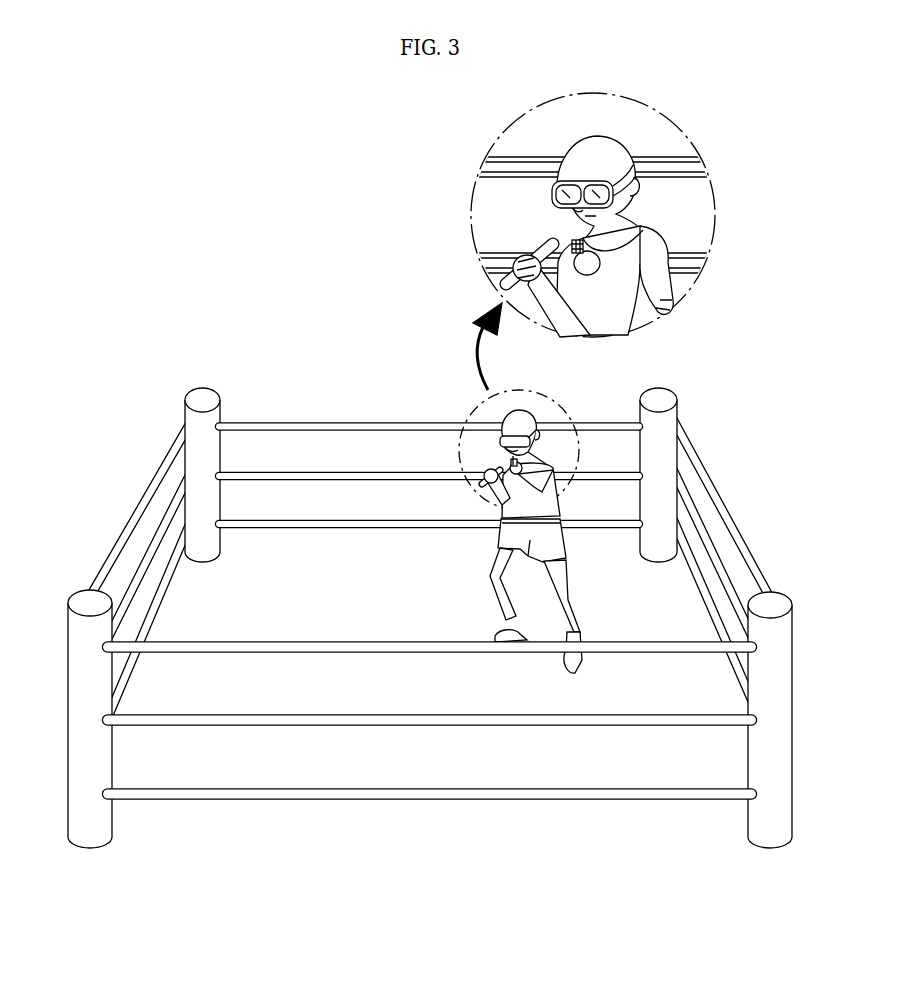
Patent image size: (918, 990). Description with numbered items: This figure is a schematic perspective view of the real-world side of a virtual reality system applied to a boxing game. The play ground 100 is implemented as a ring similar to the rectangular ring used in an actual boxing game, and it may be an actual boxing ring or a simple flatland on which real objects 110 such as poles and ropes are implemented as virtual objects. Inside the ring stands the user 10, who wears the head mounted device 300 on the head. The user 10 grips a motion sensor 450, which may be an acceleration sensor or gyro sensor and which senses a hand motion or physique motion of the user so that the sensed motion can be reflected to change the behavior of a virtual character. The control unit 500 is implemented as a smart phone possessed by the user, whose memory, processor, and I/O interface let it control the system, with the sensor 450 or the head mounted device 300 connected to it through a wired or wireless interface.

The play ground 100 is at (430, 601).
The real objects 110 is at (248, 423).
The user 10 is at (560, 543).
The head mounted device 300 is at (556, 192).
The motion sensor 450 is at (548, 248).
The control unit 500 is at (590, 246).